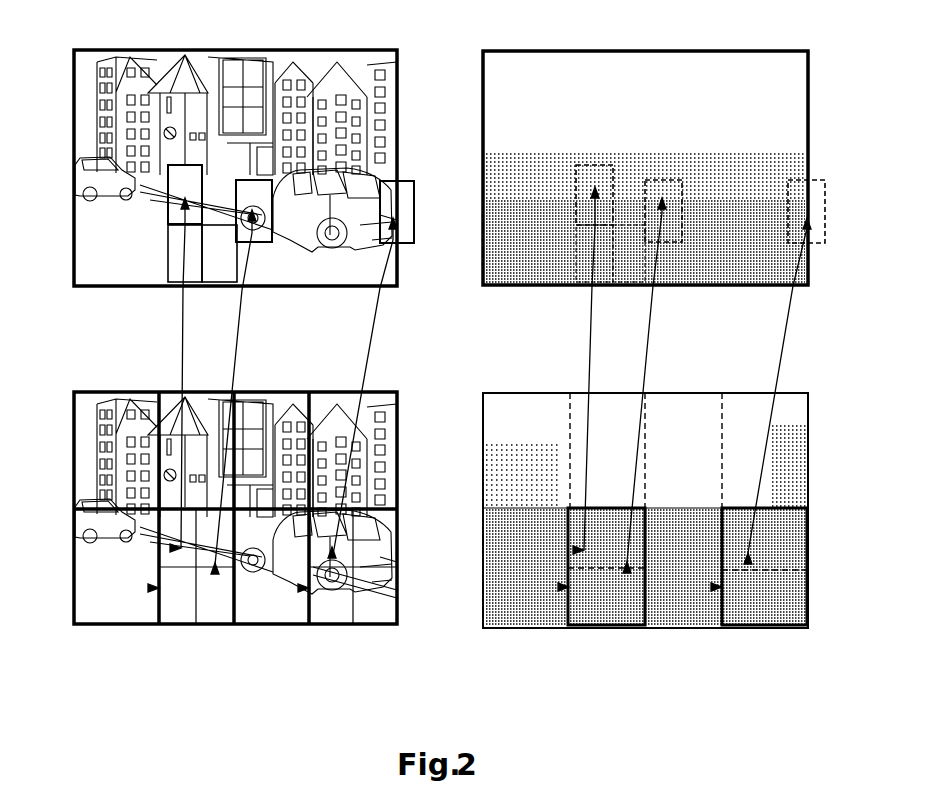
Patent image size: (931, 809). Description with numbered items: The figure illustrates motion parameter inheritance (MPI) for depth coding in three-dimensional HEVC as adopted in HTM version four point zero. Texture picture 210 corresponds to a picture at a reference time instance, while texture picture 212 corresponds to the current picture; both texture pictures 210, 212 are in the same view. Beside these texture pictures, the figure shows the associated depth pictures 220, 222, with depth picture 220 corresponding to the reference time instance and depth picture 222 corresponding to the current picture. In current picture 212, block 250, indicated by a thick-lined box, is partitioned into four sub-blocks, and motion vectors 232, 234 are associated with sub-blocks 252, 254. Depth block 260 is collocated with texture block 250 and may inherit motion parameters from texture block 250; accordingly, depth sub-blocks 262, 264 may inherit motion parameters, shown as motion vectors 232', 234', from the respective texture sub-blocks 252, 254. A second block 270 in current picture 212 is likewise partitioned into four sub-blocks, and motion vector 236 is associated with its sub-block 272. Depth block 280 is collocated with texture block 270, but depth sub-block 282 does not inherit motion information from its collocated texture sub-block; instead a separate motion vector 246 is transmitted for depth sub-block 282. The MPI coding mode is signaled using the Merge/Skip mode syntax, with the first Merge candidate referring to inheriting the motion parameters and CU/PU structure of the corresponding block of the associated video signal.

The texture picture 210 is at (112, 47).
The texture picture 212 is at (106, 392).
The second image (depth map) 220 is at (556, 50).
The second image with grid cells 222 is at (532, 394).
The motion vector 232 is at (164, 356).
The motion vector 234 is at (270, 372).
The motion vector 236 is at (384, 354).
The motion vector 232' is at (571, 357).
The motion vector 234' is at (685, 371).
The separate motion vector 246 is at (784, 350).
The block 250 is at (150, 588).
The sub-block 252 is at (172, 548).
The sub-block 254 is at (216, 576).
The block 270 is at (300, 590).
The sub-block 272 is at (331, 558).
The depth block 260 is at (560, 587).
The sub-block 262 is at (575, 550).
The sub-block 264 is at (627, 575).
The depth block 280 is at (714, 590).
The depth sub-block 282 is at (749, 565).